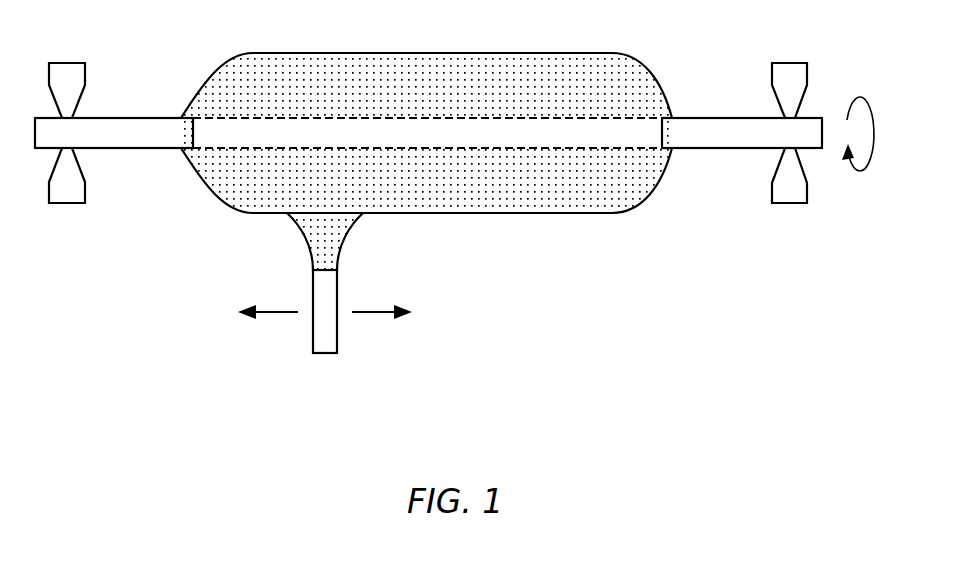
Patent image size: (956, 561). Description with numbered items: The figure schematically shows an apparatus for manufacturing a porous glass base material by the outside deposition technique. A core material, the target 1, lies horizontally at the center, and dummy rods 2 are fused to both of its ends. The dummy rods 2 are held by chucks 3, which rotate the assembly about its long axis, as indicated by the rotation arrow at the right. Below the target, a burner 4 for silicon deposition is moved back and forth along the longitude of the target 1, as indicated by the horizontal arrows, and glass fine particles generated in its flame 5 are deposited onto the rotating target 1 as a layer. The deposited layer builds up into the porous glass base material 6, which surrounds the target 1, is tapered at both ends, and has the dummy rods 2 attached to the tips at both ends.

The target 1 is at (637, 133).
The dummy rods 2 is at (710, 118).
The chucks 3 is at (785, 70).
The burner 4 is at (322, 344).
The flame 5 is at (333, 232).
The porous glass base material 6 is at (431, 63).